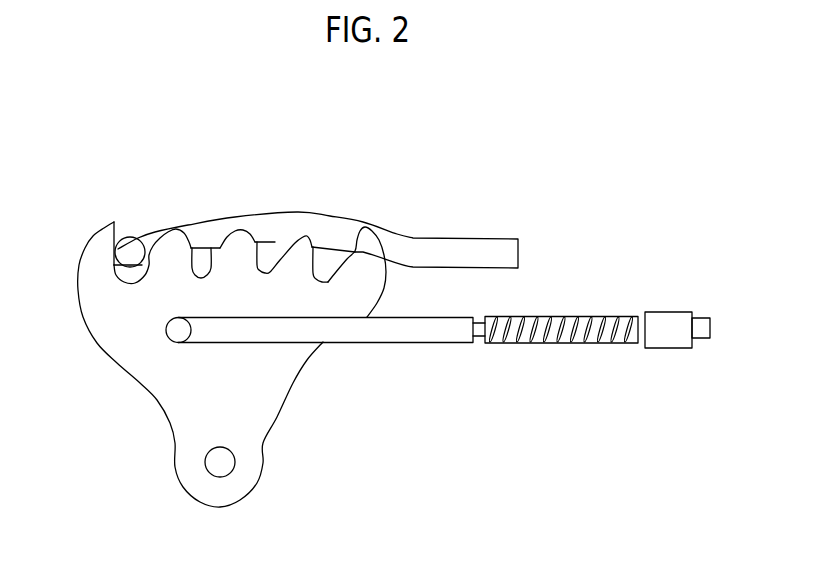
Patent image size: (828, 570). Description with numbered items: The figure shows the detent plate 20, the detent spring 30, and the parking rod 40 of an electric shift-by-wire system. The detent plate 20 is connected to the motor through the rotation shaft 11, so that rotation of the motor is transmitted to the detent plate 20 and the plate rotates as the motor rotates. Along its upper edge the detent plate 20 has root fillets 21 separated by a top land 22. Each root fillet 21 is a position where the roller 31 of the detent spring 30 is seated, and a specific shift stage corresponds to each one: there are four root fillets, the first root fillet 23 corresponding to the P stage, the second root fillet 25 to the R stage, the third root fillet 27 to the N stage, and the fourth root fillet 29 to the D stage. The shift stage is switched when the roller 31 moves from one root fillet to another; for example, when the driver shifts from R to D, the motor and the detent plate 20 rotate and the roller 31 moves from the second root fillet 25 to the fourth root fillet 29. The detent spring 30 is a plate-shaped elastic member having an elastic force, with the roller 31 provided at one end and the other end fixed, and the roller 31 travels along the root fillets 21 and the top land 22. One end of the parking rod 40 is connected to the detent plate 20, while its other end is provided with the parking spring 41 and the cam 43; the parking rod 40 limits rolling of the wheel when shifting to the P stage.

The rotation shaft 11 is at (205, 462).
The detent plate 20 is at (140, 385).
The root fillet 21 is at (340, 155).
The top land 22 is at (100, 260).
The first root fillet 23 is at (142, 265).
The second root fillet 25 is at (205, 275).
The third root fillet 27 is at (271, 270).
The fourth root fillet 29 is at (330, 280).
The detent spring 30 is at (472, 239).
The roller 31 is at (125, 249).
The parking rod 40 is at (435, 342).
The parking spring 41 is at (578, 345).
The cam 43 is at (670, 348).